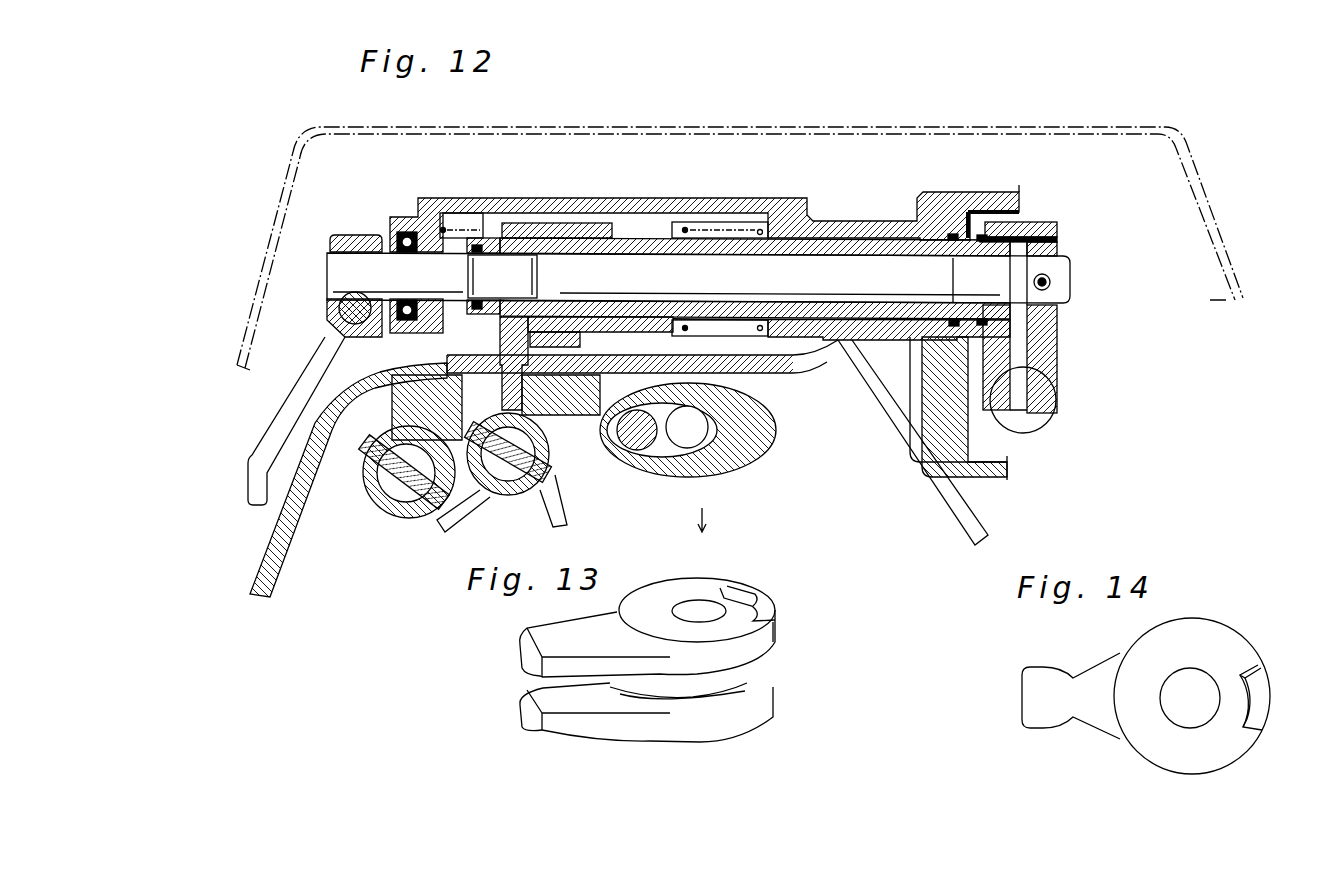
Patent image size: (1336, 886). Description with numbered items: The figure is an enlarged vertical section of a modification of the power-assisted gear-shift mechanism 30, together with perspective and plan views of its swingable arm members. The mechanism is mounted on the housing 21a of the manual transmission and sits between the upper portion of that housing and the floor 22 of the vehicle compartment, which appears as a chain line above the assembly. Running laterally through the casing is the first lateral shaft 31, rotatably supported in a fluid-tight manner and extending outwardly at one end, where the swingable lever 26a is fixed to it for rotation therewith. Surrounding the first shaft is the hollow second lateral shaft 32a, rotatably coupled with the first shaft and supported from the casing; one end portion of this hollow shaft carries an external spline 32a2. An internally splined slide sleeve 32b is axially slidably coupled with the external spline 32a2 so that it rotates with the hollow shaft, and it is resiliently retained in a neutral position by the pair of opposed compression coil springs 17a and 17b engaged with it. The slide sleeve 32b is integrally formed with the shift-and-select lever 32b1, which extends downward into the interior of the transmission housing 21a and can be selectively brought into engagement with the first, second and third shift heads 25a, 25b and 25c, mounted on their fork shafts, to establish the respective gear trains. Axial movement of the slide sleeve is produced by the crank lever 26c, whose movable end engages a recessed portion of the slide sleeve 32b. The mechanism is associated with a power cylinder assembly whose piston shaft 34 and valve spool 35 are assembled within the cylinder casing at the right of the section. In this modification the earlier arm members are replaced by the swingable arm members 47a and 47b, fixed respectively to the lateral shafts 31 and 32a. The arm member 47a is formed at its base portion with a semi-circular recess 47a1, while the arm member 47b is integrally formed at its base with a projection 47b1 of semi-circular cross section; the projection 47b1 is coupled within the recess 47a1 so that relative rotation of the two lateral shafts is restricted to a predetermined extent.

In FIG. 12, the floor 22 is at (821, 126).
In FIG. 12, the gear-shift mechanism 30 is at (650, 194).
In FIG. 12, the first lateral shaft 31 is at (873, 265).
In FIG. 12, the second lateral shaft 32a is at (833, 240).
In FIG. 12, the external spline 32a2 is at (486, 238).
In FIG. 12, the slide sleeve 32b is at (584, 222).
In FIG. 12, the shift-and-select lever 32b1 is at (508, 368).
In FIG. 12, the compression coil spring 17a is at (461, 213).
In FIG. 12, the compression coil spring 17b is at (749, 221).
In FIG. 12, the crank lever 26c is at (558, 333).
In FIG. 12, the swingable lever 26a is at (272, 418).
In FIG. 12, the transmission housing 21a is at (297, 522).
In FIG. 12, the first shift head 25a is at (446, 411).
In FIG. 12, the second shift head 25b is at (528, 395).
In FIG. 12, the third shift head 25c is at (598, 442).
In FIG. 12, the piston shaft 34 is at (1054, 411).
In FIG. 12, the valve spool 35 is at (1019, 462).
In FIG. 12, the swingable arm member 47a is at (1048, 343).
In FIG. 13, the swingable arm member 47a is at (673, 590).
In FIG. 14, the swingable arm member 47a is at (1238, 644).
In FIG. 12, the semi-circular recess 47a1 is at (1048, 247).
In FIG. 13, the semi-circular recess 47a1 is at (740, 590).
In FIG. 14, the semi-circular recess 47a1 is at (1260, 676).
In FIG. 12, the swingable arm member 47b is at (998, 330).
In FIG. 13, the swingable arm member 47b is at (597, 718).
In FIG. 12, the projection 47b1 is at (1040, 224).
In FIG. 13, the projection 47b1 is at (766, 600).
In FIG. 14, the projection 47b1 is at (1262, 723).